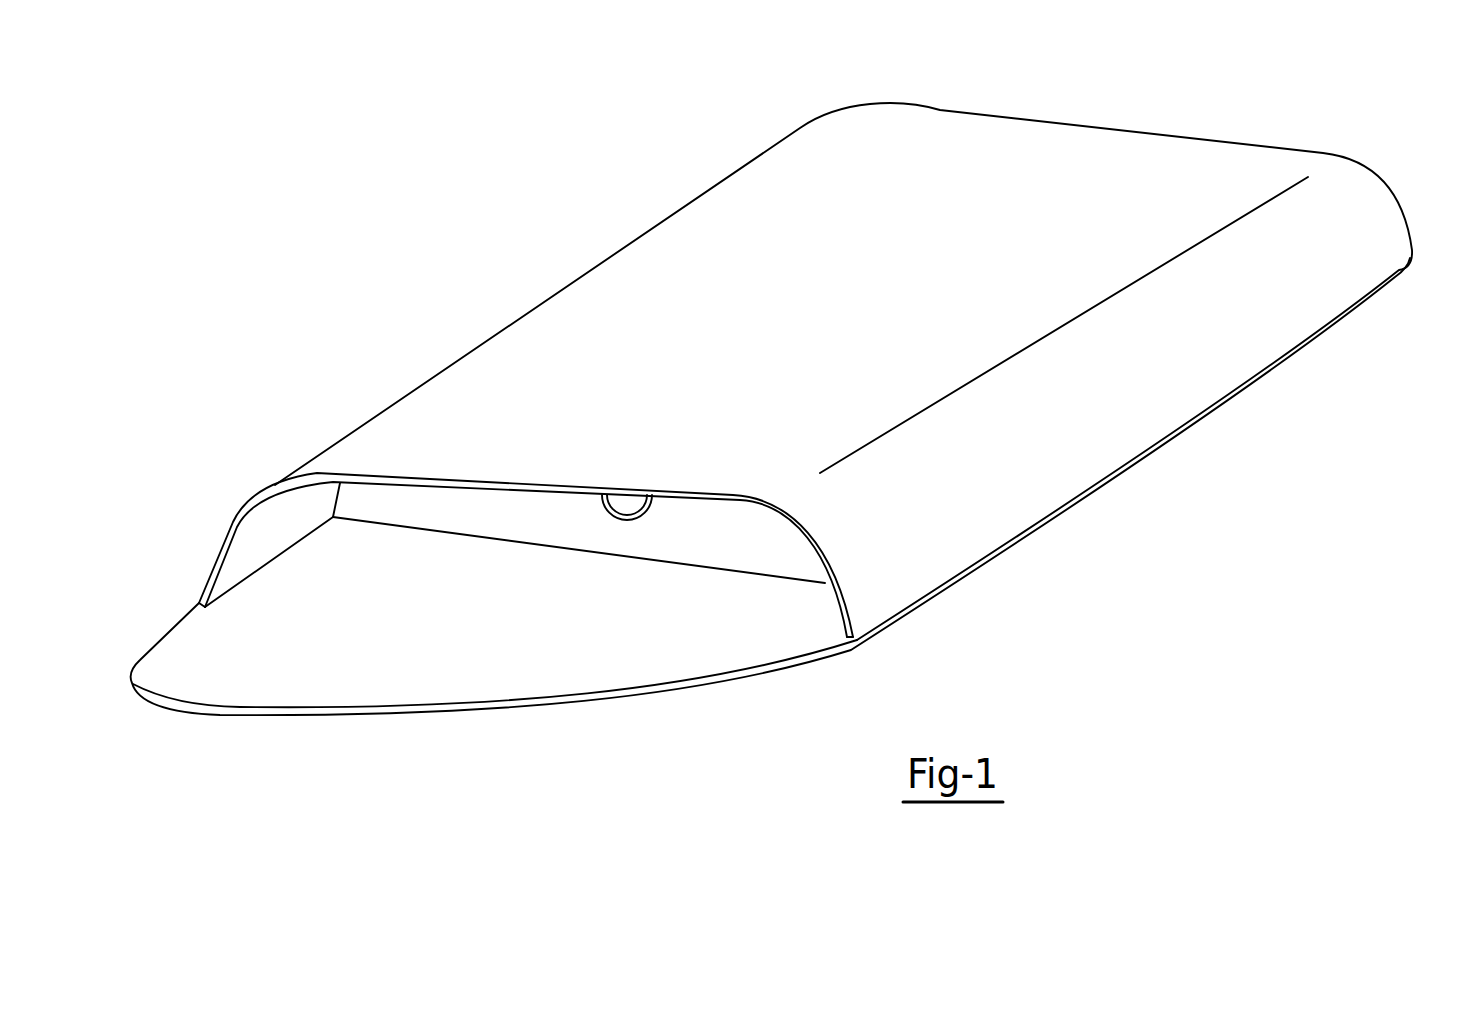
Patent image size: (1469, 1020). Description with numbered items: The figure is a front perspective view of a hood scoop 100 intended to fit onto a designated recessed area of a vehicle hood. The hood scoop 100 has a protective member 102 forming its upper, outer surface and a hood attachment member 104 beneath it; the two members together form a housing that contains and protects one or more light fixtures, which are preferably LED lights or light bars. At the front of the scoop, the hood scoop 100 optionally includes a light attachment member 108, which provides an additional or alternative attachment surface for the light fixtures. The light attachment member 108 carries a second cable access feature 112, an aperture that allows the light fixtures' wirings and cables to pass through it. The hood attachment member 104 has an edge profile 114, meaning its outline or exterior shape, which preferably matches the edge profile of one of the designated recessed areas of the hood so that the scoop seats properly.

The hood scoop 100 is at (786, 402).
The protective member 102 is at (1063, 165).
The hood attachment member 104 is at (1390, 273).
The light attachment member 108 is at (507, 520).
The second cable access feature 112 is at (627, 503).
The edge profile 114 is at (827, 658).